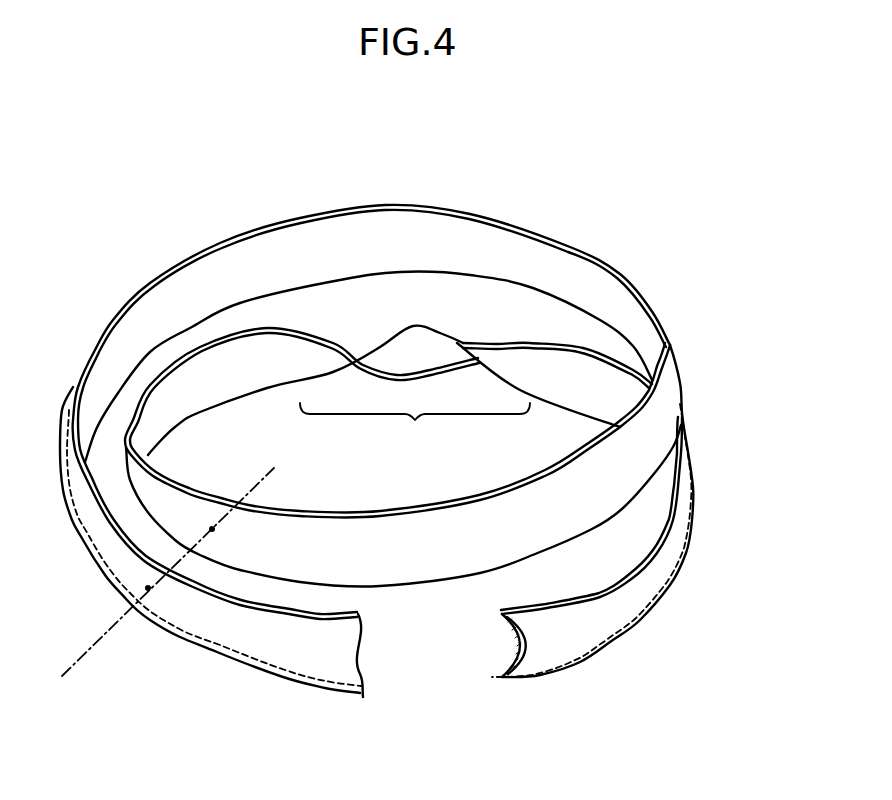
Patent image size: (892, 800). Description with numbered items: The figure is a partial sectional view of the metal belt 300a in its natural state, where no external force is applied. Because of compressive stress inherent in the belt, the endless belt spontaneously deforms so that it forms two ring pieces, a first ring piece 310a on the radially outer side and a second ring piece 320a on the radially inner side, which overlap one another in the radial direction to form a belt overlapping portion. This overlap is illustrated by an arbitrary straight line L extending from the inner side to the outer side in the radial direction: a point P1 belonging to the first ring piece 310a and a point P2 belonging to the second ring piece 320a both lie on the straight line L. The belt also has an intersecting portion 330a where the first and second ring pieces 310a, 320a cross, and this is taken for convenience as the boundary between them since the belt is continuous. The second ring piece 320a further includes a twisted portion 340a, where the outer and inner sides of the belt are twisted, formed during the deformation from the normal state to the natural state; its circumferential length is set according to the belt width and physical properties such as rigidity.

The metal belt 300a is at (205, 203).
The first ring piece 310a is at (207, 622).
The second ring piece 320a is at (553, 377).
The intersecting portion 330a is at (695, 413).
The twisted portion 340a is at (415, 430).
The straight line L is at (94, 642).
The point P1 is at (168, 602).
The point P2 is at (231, 541).